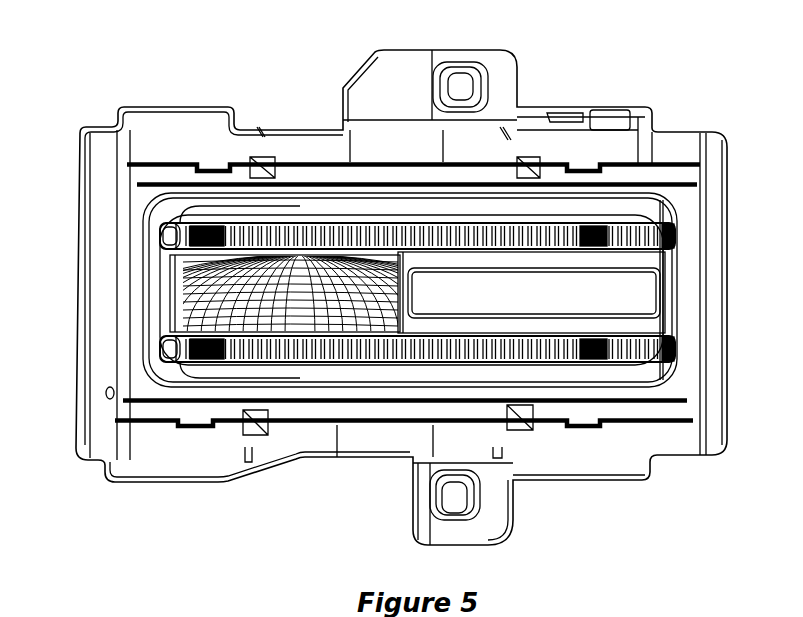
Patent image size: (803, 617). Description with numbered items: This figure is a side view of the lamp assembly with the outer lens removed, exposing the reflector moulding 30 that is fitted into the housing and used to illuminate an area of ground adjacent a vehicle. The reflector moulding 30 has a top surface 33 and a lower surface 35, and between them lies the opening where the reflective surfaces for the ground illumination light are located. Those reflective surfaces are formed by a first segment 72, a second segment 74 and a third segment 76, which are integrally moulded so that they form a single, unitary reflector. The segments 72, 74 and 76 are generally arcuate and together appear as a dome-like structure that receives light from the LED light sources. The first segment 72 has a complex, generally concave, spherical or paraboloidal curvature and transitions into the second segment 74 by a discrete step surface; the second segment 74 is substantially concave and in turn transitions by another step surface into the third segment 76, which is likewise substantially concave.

The reflector moulding 30 is at (530, 63).
The top surface 33 is at (172, 242).
The lower surface 35 is at (247, 327).
The first segment 72 is at (214, 305).
The second segment 74 is at (313, 283).
The third segment 76 is at (385, 312).